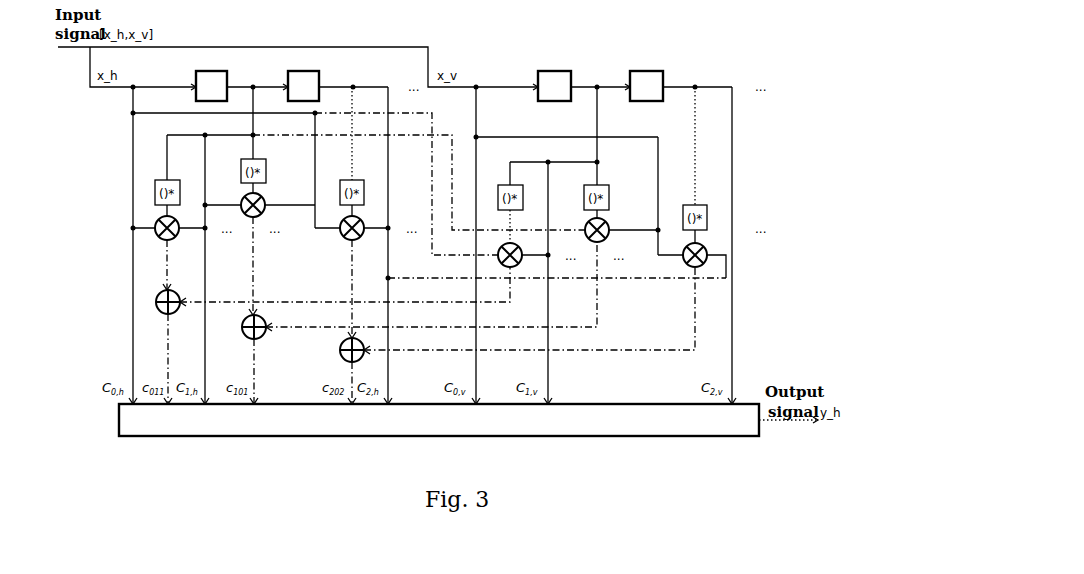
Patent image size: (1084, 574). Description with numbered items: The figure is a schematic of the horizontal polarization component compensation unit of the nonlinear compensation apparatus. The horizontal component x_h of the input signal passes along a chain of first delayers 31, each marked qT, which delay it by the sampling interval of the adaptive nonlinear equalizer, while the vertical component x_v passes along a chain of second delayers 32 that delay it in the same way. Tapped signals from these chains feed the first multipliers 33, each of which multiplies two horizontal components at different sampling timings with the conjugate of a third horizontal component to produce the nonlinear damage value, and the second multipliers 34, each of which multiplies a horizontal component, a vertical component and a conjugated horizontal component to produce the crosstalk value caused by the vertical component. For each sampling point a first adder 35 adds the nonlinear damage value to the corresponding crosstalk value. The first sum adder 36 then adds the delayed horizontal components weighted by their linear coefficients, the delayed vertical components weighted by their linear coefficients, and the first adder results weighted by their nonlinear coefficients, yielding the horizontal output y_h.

The first delayer 31 is at (257, 77).
The second delayer 32 is at (600, 77).
The first multiplier 33 is at (266, 223).
The second multiplier 34 is at (612, 249).
The first adder 35 is at (250, 325).
The first sum adder 36 is at (465, 437).